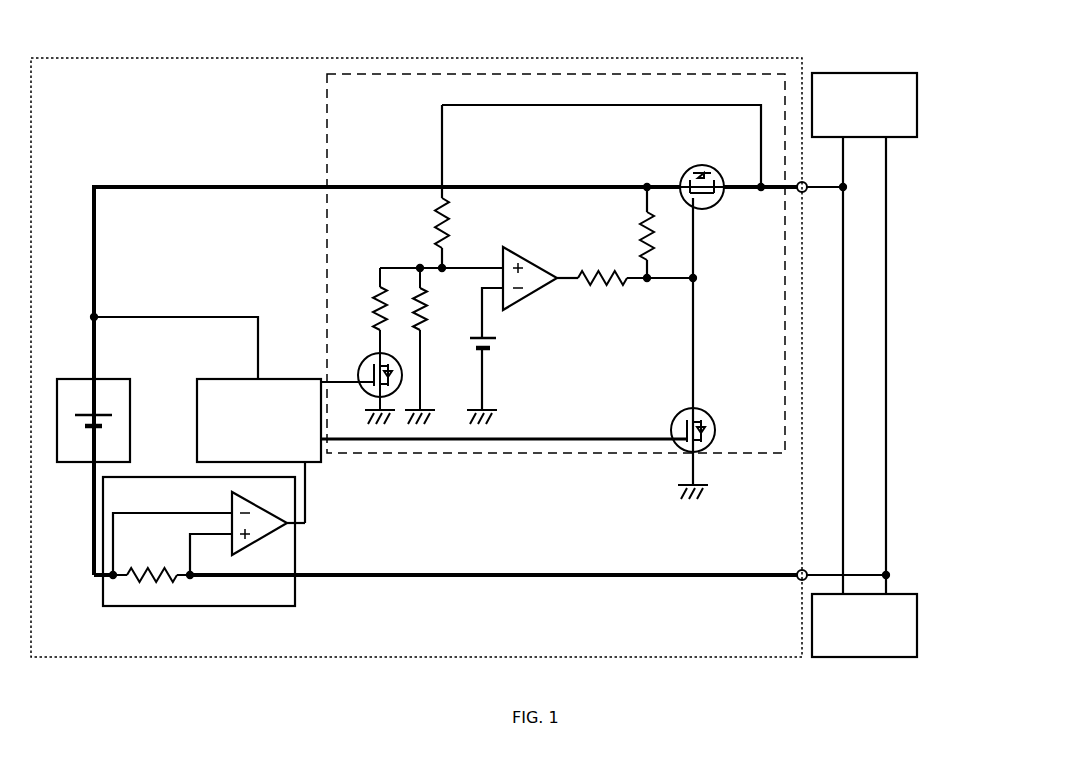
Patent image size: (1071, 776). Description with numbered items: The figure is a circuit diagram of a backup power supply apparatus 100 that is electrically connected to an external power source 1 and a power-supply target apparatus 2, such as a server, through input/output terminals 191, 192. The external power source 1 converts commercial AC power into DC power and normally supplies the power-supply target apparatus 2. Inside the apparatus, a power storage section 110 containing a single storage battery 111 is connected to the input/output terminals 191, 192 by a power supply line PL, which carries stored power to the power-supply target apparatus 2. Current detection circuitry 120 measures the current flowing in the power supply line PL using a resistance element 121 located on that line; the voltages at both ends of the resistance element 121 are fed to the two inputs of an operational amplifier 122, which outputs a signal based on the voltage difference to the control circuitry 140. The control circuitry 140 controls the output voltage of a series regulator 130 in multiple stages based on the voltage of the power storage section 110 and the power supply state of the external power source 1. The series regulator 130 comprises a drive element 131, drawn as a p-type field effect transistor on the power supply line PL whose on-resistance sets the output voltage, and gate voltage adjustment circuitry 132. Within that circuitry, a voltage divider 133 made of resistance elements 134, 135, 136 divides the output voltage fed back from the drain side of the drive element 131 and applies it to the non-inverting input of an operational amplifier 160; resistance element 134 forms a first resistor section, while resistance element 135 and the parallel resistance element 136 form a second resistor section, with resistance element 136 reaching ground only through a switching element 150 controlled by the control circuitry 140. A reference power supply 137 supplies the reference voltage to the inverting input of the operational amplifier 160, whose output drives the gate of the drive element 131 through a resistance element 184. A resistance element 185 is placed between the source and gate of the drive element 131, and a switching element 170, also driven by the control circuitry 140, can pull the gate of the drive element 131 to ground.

The backup power supply apparatus 100 is at (121, 57).
The series regulator 130 is at (326, 120).
The gate voltage adjustment circuitry 132 is at (390, 115).
The power supply line PL is at (92, 263).
The external power source 1 is at (917, 108).
The power-supply target apparatus 2 is at (917, 625).
The input/output terminal 191 is at (804, 193).
The input/output terminal 192 is at (805, 568).
The power storage section 110 is at (83, 379).
The storage battery 111 is at (88, 413).
The control circuitry 140 is at (232, 379).
The current detection circuitry 120 is at (195, 606).
The resistance element 121 is at (143, 565).
The operational amplifier 122 is at (266, 538).
The switching element 150 is at (361, 368).
The resistance element 136 is at (374, 306).
The resistance element 135 is at (437, 308).
The resistance element 134 is at (437, 229).
The voltage divider 133 is at (474, 224).
The operational amplifier 160 is at (530, 298).
The reference power supply 137 is at (497, 345).
The resistance element 184 is at (607, 287).
The resistance element 185 is at (641, 235).
The drive element 131 is at (706, 167).
The switching element 170 is at (718, 433).